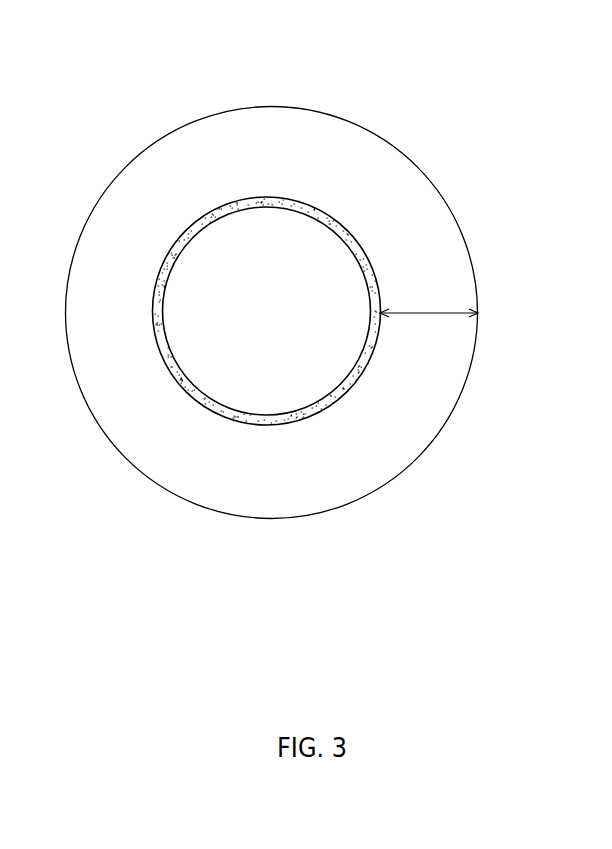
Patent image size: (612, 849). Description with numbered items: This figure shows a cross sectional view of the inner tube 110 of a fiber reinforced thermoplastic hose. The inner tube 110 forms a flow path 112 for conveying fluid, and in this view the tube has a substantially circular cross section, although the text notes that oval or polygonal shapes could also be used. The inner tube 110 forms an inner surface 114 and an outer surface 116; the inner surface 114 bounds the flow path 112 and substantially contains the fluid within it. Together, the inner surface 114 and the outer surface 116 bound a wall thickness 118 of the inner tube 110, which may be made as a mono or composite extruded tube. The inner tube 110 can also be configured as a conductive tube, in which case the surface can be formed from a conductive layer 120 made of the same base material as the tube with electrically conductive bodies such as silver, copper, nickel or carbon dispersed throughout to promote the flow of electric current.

The inner tube 110 is at (108, 99).
The flow path 112 is at (276, 391).
The inner surface 114 is at (360, 126).
The outer surface 116 is at (289, 212).
The wall thickness 118 is at (446, 318).
The conductive layer 120 is at (295, 203).